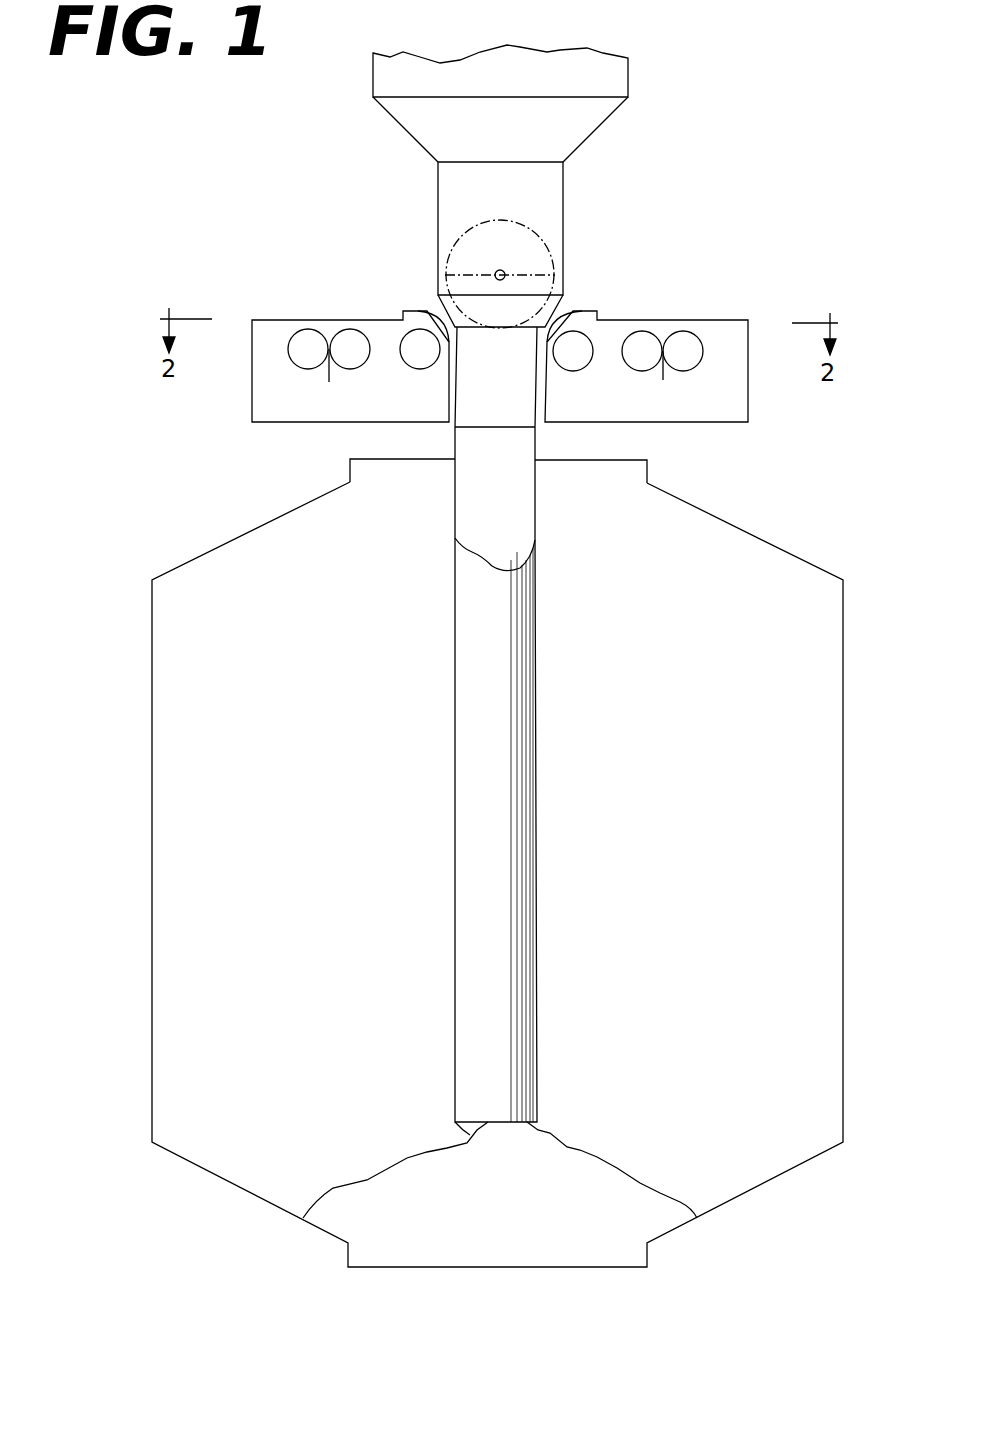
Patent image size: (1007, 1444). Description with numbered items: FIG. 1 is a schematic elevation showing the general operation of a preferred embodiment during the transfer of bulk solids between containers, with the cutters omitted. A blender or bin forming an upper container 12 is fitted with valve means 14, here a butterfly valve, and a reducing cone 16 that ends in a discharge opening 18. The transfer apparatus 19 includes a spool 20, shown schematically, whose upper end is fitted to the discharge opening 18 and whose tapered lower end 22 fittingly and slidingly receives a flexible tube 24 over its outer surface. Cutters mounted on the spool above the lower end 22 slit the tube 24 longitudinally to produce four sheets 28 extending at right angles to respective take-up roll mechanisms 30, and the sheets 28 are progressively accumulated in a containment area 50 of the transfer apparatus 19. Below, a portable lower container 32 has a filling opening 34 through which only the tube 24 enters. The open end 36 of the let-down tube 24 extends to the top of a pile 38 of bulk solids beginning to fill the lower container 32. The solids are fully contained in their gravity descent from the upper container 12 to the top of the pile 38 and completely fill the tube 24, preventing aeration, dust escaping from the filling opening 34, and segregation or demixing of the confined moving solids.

The upper container 12 is at (518, 80).
The valve means 14 is at (492, 220).
The reducing cone 16 is at (514, 322).
The discharge opening 18 is at (530, 338).
The transfer apparatus 19 is at (741, 279).
The spool 20 is at (432, 312).
The tapered lower end 22 is at (507, 428).
The flexible tube 24 is at (537, 597).
The sheets 28 is at (373, 320).
The take-up roll mechanisms 30 is at (323, 366).
The lower container 32 is at (728, 523).
The filling opening 34 is at (357, 470).
The open end 36 is at (473, 1123).
The pile 38 is at (617, 1165).
The containment area 50 is at (382, 408).